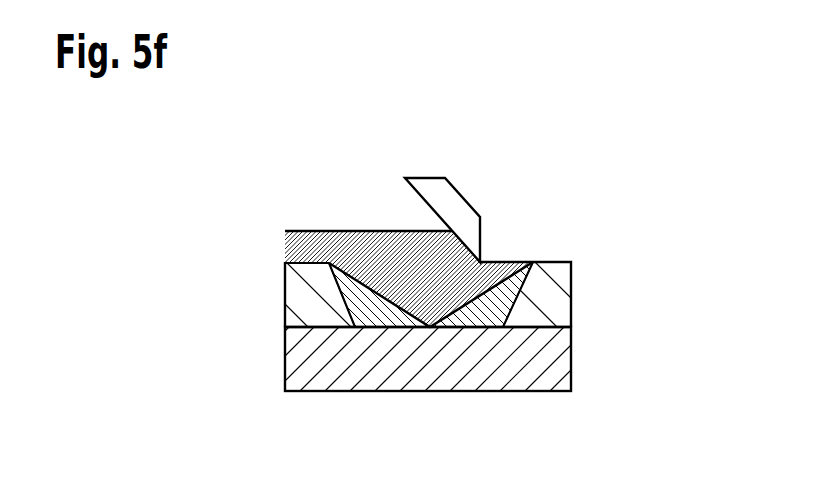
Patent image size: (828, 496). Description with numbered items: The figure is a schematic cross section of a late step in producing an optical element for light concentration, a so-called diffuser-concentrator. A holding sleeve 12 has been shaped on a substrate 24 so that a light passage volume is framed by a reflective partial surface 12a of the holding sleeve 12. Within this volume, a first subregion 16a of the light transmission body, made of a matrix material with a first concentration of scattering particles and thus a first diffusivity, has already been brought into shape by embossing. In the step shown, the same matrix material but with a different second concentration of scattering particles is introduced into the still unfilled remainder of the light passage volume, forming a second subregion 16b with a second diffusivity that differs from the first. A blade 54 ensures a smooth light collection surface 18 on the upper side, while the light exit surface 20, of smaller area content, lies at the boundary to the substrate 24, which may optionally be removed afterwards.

The holding sleeve 12 is at (560, 314).
The reflective partial surface 12a is at (332, 271).
The first subregion 16a is at (520, 263).
The second subregion 16b is at (360, 250).
The light collection surface 18 is at (506, 259).
The light exit surface 20 is at (472, 331).
The substrate 24 is at (560, 362).
The blade 54 is at (445, 196).